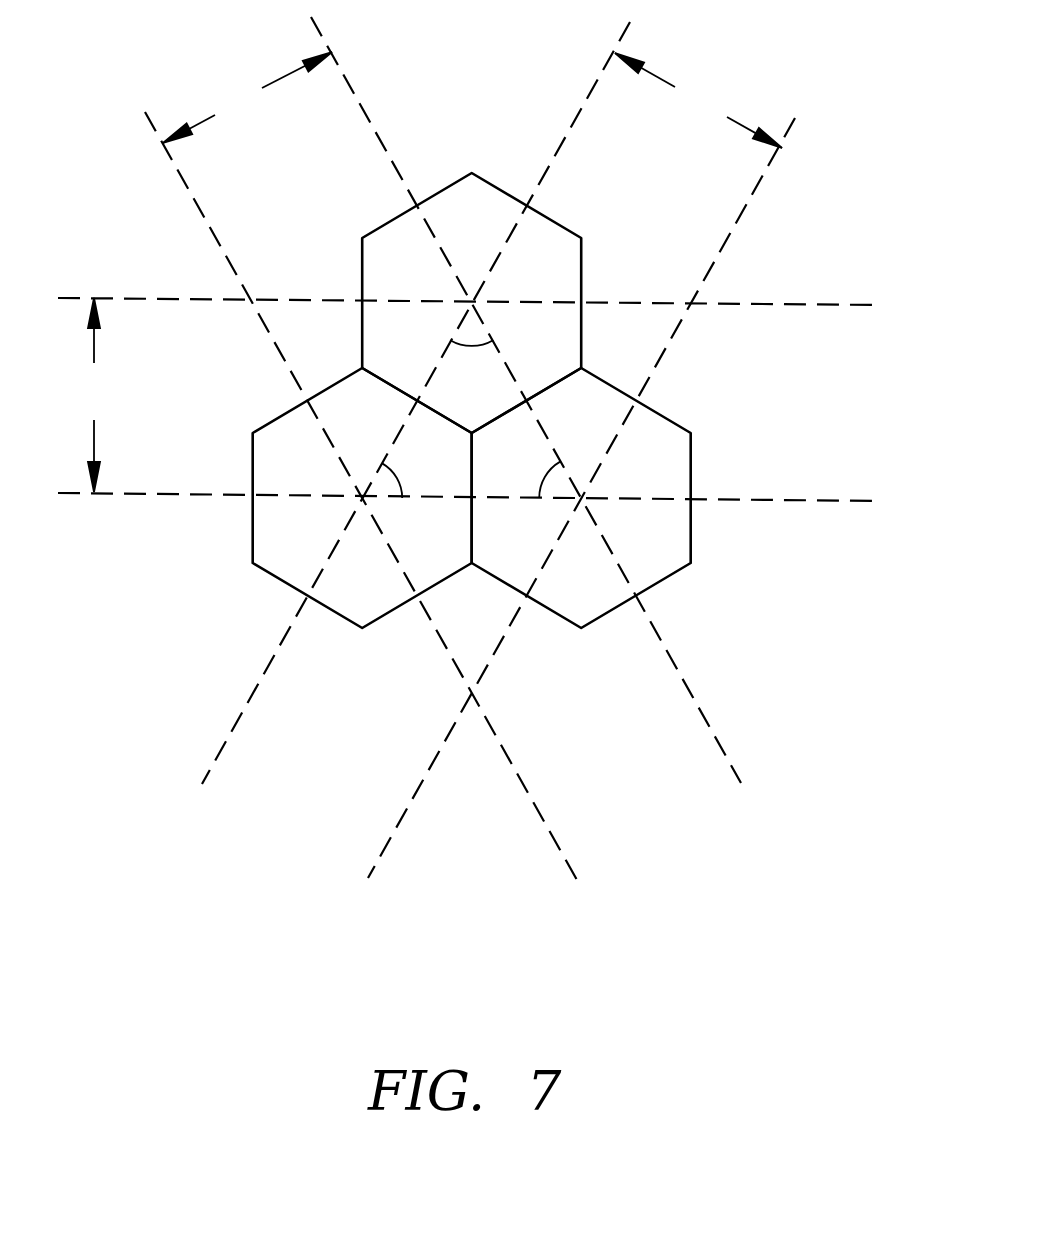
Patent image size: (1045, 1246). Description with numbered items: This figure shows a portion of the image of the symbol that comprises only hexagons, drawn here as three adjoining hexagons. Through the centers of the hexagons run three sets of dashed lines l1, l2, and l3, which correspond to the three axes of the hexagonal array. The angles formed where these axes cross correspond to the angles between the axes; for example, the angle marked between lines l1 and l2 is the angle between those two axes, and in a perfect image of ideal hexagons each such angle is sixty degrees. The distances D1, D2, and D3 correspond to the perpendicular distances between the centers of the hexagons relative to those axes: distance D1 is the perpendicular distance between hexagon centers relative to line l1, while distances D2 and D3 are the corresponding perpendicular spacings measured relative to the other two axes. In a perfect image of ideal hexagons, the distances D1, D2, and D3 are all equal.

The line l1 is at (857, 304).
The line l2 is at (722, 748).
The line l3 is at (220, 740).
The distance D1 is at (92, 395).
The distance D2 is at (247, 97).
The distance D3 is at (698, 100).